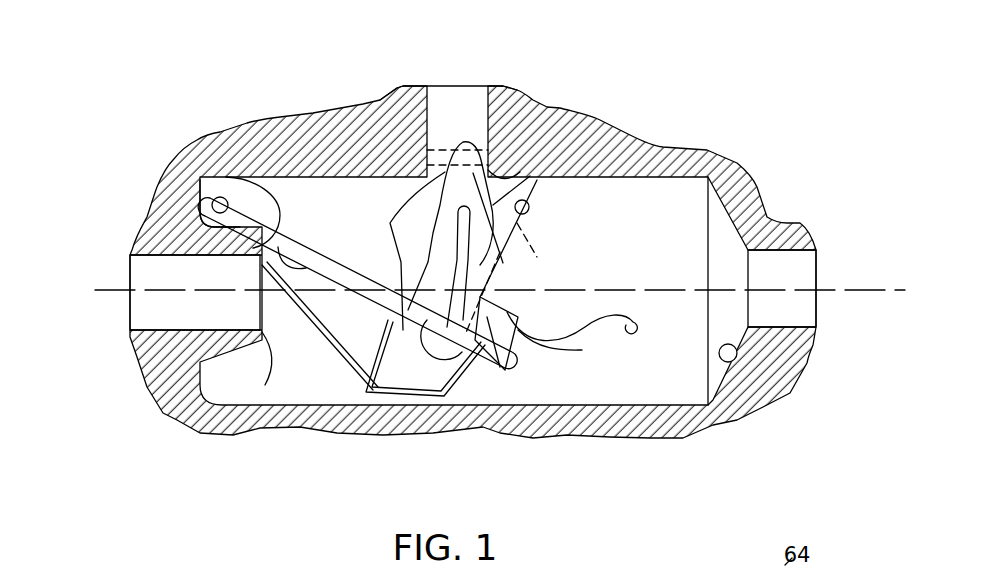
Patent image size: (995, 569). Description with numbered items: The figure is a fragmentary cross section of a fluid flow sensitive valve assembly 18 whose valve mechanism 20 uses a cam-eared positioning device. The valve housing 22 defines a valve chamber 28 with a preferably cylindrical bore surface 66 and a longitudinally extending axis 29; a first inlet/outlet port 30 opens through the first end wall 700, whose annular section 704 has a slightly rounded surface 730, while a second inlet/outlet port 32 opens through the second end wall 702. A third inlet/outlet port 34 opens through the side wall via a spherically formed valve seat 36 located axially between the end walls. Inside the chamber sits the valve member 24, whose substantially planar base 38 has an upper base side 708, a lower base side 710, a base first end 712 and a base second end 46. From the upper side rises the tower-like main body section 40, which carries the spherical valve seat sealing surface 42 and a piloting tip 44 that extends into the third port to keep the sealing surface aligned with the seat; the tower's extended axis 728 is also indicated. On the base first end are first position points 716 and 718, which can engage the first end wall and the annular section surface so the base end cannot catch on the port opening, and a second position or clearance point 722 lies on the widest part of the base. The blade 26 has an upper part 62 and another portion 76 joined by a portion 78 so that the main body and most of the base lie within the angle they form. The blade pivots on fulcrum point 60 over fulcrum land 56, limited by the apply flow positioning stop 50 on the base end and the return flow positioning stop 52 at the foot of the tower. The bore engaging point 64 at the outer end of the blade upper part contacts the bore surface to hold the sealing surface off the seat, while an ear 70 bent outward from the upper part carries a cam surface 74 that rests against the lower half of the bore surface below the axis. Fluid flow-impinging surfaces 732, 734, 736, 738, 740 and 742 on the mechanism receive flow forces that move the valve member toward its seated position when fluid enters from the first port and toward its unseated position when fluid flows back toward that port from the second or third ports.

The valve assembly 18 is at (672, 118).
The valve mechanism 20 is at (453, 112).
The valve housing 22 is at (613, 132).
The valve member 24 is at (413, 186).
The cam-eared positioning device or blade 26 is at (456, 392).
The valve chamber 28 is at (592, 388).
The valve chamber axis 29 is at (163, 290).
The first inlet/outlet port 30 is at (170, 272).
The second inlet/outlet port 32 is at (788, 305).
The third inlet/outlet port 34 is at (437, 112).
The valve seat 36 is at (511, 122).
The base 38 is at (283, 230).
The main body section 40 is at (418, 207).
The valve seat sealing surface 42 is at (528, 180).
The piloting tip 44 is at (473, 112).
The base second end 46 is at (512, 378).
The apply flow positioning stop 50 is at (503, 341).
The return flow positioning stop 52 is at (488, 300).
The fulcrum land 56 is at (470, 383).
The fulcrum point 60 is at (443, 300).
The blade upper part 62 is at (503, 246).
The bore engaging point 64 is at (545, 182).
The valve chamber bore surface 66 is at (627, 178).
The ear 70 is at (636, 318).
The cam surface 74 is at (582, 350).
The blade portion 76 is at (337, 355).
The blade joining portion 78 is at (397, 398).
The first end wall 700 is at (214, 400).
The second end wall 702 is at (726, 364).
The annular section 704 is at (247, 364).
The upper base side 708 is at (283, 262).
The lower base side 710 is at (300, 258).
The base first end 712 is at (213, 196).
The first position point 716 is at (197, 210).
The first position point 718 is at (223, 238).
The second position point 722 is at (365, 392).
The extended axis 728 is at (414, 310).
The annular section surface 730 is at (274, 182).
The fluid flow-impinging surface 732 is at (327, 284).
The fluid flow-impinging surface 734 is at (327, 262).
The fluid flow-impinging surface 736 is at (290, 300).
The fluid flow-impinging surface 738 is at (300, 300).
The fluid flow-impinging surface 740 is at (530, 210).
The fluid flow-impinging surface 742 is at (519, 279).